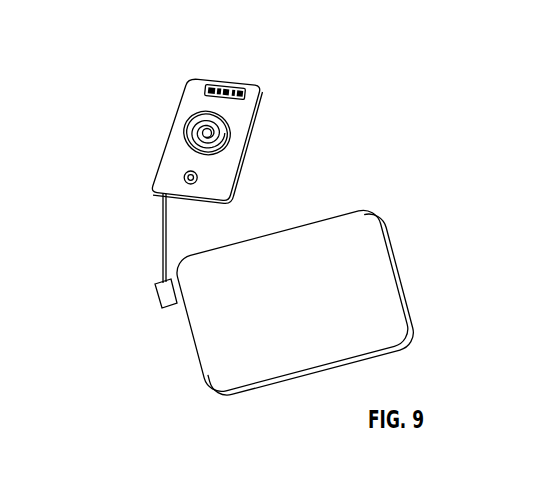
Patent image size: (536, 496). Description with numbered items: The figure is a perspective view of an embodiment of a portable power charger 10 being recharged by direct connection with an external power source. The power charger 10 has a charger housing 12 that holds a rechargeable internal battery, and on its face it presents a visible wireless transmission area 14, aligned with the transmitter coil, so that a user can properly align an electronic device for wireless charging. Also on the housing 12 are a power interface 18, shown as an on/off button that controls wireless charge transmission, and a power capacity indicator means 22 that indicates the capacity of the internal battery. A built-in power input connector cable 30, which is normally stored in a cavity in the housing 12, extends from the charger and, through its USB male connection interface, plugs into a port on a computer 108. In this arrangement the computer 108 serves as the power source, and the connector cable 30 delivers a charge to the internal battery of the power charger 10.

The portable power charger 10 is at (219, 116).
The charger housing 12 is at (237, 175).
The wireless transmission area 14 is at (231, 133).
The power interface 18 is at (184, 180).
The power capacity indicator means 22 is at (231, 82).
The power input connector cable 30 is at (158, 267).
The computer 108 is at (277, 380).